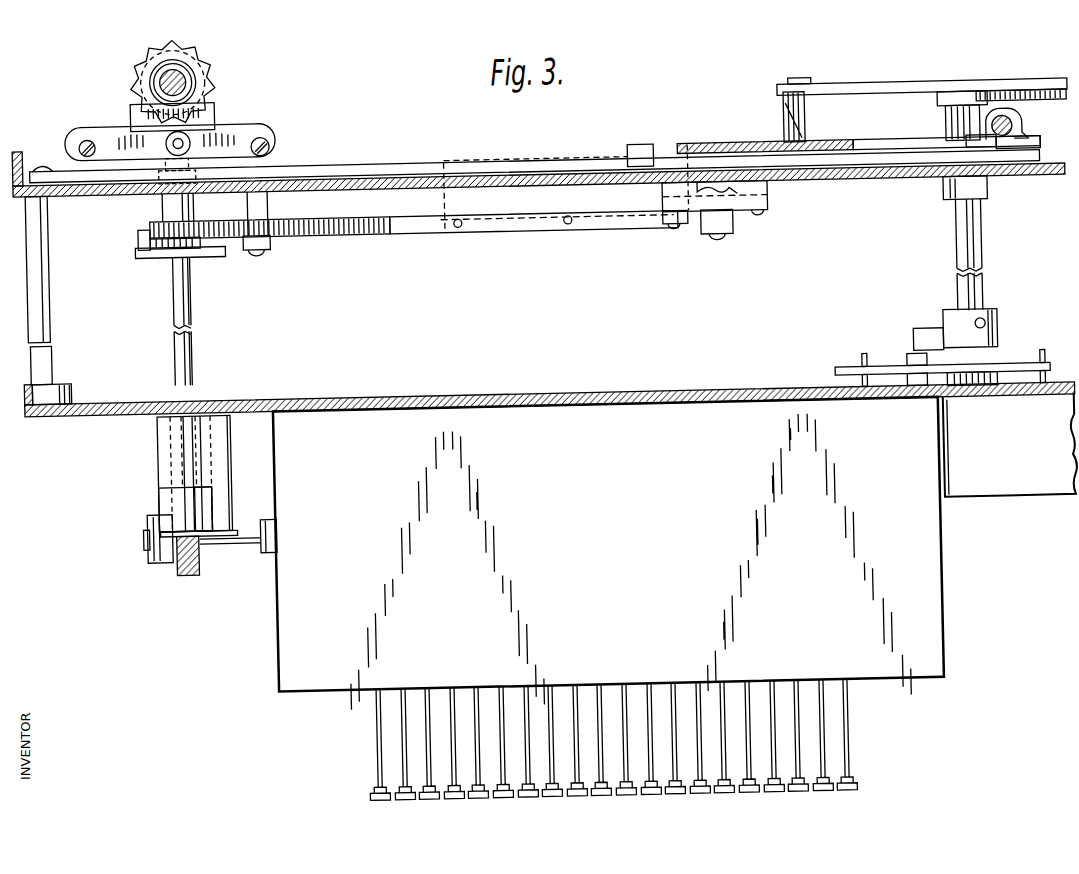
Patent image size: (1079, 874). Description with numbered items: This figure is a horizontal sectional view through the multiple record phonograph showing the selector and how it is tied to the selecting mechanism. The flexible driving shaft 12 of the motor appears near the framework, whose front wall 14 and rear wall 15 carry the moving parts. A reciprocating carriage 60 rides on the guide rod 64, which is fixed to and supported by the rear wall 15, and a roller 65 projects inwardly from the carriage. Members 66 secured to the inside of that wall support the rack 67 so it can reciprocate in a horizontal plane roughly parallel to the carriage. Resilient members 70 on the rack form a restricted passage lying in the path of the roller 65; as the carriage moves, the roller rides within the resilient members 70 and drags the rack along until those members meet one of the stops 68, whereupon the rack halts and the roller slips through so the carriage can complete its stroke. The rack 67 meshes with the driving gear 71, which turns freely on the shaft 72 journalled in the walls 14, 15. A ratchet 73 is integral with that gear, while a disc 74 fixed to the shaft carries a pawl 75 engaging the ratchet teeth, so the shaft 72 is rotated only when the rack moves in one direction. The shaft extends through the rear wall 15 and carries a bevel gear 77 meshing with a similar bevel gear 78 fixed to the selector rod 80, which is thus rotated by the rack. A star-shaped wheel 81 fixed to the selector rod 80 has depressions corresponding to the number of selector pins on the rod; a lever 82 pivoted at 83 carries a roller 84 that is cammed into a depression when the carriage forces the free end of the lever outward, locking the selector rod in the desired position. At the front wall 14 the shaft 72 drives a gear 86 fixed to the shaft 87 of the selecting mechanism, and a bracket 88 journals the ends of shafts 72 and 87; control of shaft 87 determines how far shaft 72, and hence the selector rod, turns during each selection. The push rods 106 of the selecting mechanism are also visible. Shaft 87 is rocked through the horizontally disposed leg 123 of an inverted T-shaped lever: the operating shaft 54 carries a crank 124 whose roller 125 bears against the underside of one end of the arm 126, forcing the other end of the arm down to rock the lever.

The flexible driving shaft 12 is at (97, 216).
The front wall 14 is at (481, 405).
The rear wall 15 is at (892, 192).
The operating shaft 54 is at (976, 305).
The reciprocating carriage 60 is at (736, 158).
The guide rod 64 is at (398, 172).
The roller 65 is at (805, 195).
The members 66 is at (274, 222).
The rack 67 is at (413, 243).
The stops 68 is at (298, 188).
The resilient members 70 is at (535, 215).
The driving gear 71 is at (156, 229).
The shaft 72 is at (191, 342).
The ratchet 73 is at (156, 262).
The disc 74 is at (213, 262).
The pawl 75 is at (137, 250).
The bevel gear 77 is at (216, 105).
The bevel gear 78 is at (140, 72).
The selector rod 80 is at (181, 81).
The star-shaped wheel 81 is at (201, 87).
The lever 82 is at (236, 146).
The pivot 83 is at (84, 143).
The roller 84 is at (168, 141).
The gear 86 is at (172, 577).
The shaft 87 is at (240, 549).
The bracket 88 is at (156, 458).
The push rods 106 is at (662, 706).
The horizontally disposed leg 123 is at (855, 400).
The crank 124 is at (945, 350).
The roller 125 is at (925, 360).
The arm 126 is at (1012, 382).